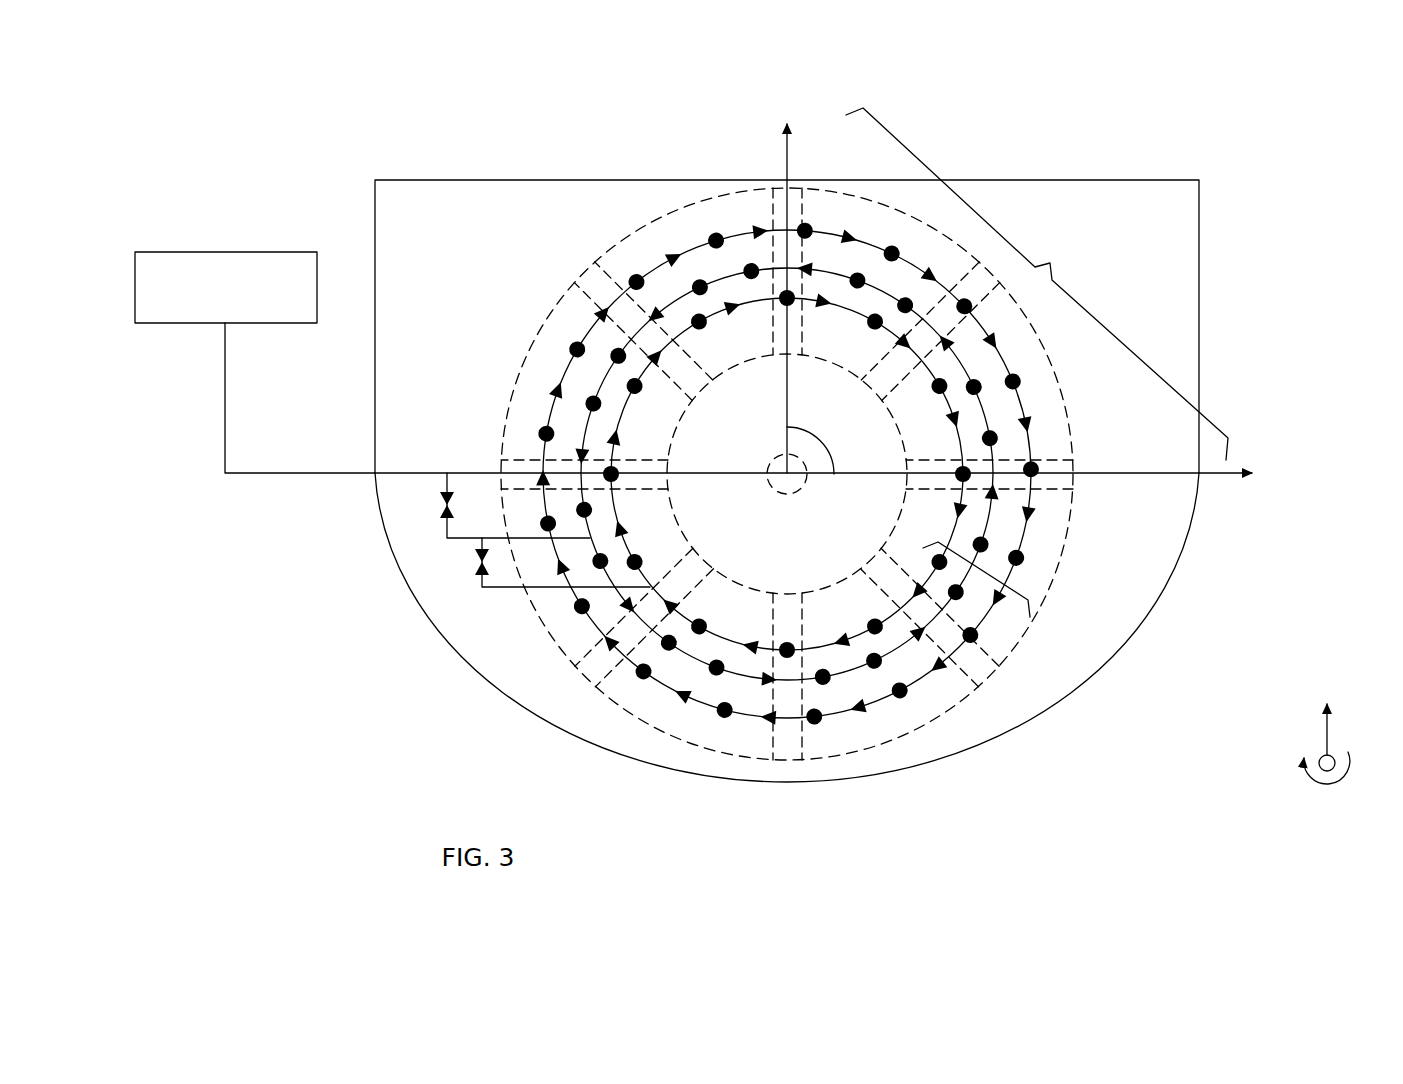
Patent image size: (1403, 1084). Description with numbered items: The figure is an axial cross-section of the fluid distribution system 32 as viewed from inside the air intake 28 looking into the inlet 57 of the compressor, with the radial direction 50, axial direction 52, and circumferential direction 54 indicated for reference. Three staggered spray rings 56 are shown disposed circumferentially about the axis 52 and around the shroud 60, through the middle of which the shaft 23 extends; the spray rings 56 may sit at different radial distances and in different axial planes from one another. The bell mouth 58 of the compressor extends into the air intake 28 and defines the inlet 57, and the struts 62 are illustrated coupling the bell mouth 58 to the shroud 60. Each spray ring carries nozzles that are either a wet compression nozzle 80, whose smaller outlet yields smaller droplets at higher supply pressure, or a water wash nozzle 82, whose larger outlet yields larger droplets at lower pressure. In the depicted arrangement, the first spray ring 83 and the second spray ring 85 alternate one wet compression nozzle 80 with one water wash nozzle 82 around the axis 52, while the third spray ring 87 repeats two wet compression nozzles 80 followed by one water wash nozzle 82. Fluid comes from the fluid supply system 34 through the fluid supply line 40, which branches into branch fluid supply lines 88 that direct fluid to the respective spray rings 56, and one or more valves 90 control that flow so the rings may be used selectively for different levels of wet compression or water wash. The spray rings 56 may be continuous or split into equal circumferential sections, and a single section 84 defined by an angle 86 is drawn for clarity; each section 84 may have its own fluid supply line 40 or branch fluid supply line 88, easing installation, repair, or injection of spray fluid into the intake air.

The shaft 23 is at (771, 488).
The air intake 28 is at (1175, 596).
The fluid distribution system 32 is at (853, 473).
The fluid supply system 34 is at (177, 324).
The fluid supply line 40 is at (314, 474).
The radial axis or direction 50 is at (1330, 728).
The axial axis or direction 52 is at (1320, 757).
The circumferential axis or direction 54 is at (1346, 786).
The spray rings 56 is at (719, 519).
The inlet 57 is at (640, 547).
The bell mouth 58 is at (1022, 646).
The shroud 60 is at (731, 368).
The struts 62 is at (785, 764).
The wet compression nozzle 80 is at (900, 696).
The water wash nozzle 82 is at (864, 716).
The first spray ring 83 is at (611, 449).
The section 84 is at (1037, 284).
The second spray ring 85 is at (787, 519).
The angle 86 is at (818, 445).
The third spray ring 87 is at (608, 383).
The branch fluid supply lines 88 is at (445, 492).
The valves 90 is at (443, 503).